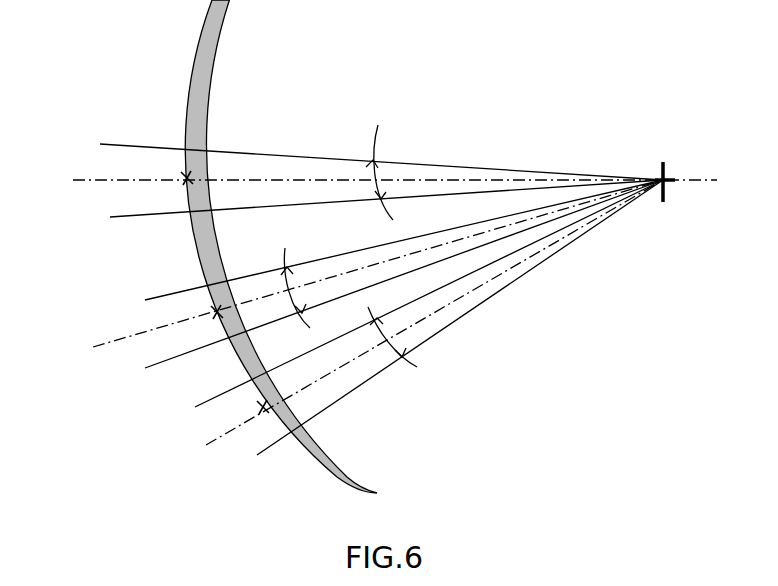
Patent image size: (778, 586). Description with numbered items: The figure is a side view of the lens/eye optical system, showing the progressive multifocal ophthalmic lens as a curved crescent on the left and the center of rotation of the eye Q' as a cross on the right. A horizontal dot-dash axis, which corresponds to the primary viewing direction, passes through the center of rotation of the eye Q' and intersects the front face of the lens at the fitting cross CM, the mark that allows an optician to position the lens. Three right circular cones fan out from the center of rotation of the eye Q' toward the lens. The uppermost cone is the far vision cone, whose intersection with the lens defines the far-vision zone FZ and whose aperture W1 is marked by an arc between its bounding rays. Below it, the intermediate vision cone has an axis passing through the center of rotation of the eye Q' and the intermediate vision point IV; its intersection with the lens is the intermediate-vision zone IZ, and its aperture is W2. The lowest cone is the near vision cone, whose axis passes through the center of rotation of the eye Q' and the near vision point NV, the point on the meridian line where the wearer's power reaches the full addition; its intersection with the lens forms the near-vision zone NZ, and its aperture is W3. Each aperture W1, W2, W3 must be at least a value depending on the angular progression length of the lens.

The far-vision zone FZ is at (177, 167).
The fitting cross CM is at (187, 178).
The intermediate-vision zone IZ is at (203, 302).
The intermediate vision point IV is at (217, 312).
The near-vision zone NZ is at (257, 428).
The near vision point NV is at (263, 407).
The aperture of the far vision cone W1 is at (392, 167).
The aperture of the intermediate vision cone W2 is at (303, 281).
The aperture of the near vision cone W3 is at (414, 352).
The center of rotation of the eye Q' is at (658, 199).